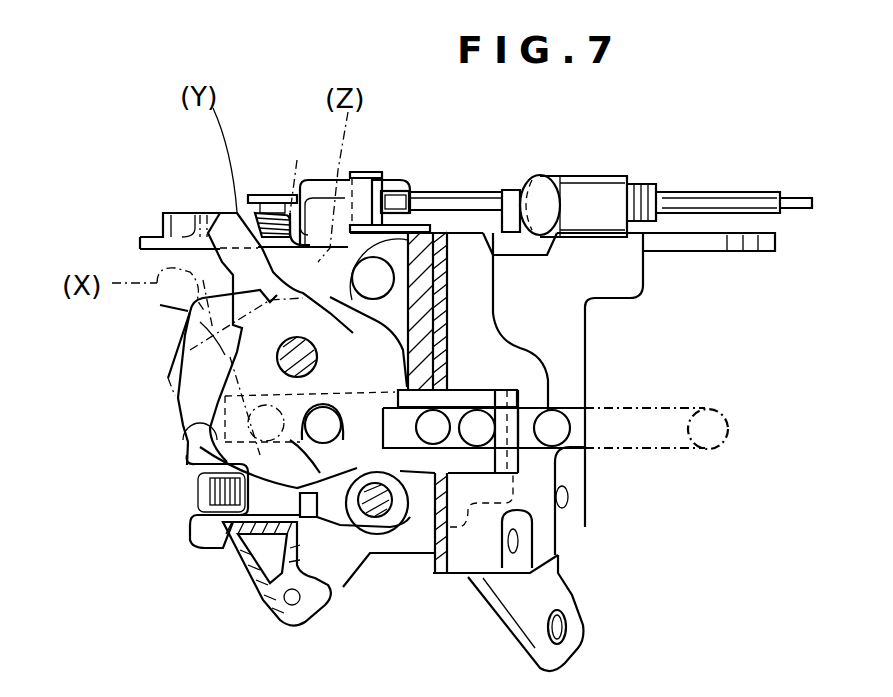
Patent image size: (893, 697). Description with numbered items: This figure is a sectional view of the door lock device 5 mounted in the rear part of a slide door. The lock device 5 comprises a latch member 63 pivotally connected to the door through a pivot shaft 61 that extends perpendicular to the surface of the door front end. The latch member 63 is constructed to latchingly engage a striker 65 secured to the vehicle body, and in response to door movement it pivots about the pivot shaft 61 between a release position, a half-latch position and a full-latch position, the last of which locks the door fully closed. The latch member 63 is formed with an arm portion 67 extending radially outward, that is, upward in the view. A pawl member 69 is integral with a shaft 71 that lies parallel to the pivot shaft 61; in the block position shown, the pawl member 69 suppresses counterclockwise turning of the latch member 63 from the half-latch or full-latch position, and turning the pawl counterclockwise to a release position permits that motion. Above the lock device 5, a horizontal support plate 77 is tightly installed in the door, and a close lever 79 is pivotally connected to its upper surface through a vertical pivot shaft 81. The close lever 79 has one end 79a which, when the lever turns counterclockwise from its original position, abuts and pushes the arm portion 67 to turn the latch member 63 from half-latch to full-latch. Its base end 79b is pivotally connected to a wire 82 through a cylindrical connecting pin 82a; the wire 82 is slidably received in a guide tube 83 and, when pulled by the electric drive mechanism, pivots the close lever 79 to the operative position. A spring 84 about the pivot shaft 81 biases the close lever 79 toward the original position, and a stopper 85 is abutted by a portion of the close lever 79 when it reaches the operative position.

The door lock device 5 is at (201, 545).
The pivot shaft 61 is at (277, 355).
The latch member 63 is at (181, 427).
The striker 65 is at (480, 425).
The arm portion 67 is at (218, 213).
The pawl member 69 is at (343, 530).
The shaft 71 is at (384, 520).
The support plate 77 is at (715, 253).
The close lever 79 is at (152, 232).
The end of close lever 79a is at (165, 213).
The base end of close lever 79b is at (395, 183).
The vertical pivot shaft 81 is at (268, 195).
The wire 82 is at (476, 200).
The cylindrical connecting pin 82a is at (378, 172).
The guide tube 83 is at (725, 192).
The spring 84 is at (284, 213).
The stopper 85 is at (535, 215).